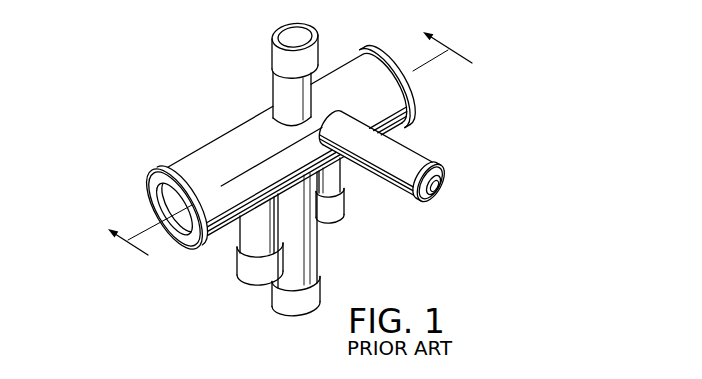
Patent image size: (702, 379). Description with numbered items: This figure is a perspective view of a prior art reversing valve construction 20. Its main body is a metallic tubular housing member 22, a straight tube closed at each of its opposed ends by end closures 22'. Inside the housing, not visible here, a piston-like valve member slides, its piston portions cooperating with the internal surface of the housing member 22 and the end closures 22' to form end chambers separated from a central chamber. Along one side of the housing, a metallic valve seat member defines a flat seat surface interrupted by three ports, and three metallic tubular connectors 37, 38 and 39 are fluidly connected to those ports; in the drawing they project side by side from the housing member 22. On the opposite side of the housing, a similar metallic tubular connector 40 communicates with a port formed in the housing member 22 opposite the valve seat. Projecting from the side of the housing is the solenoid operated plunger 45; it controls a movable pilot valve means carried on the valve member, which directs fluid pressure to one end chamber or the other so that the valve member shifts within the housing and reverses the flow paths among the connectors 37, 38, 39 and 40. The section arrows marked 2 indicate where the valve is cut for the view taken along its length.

The reversing valve construction 20 is at (281, 168).
The tubular housing member 22 is at (261, 145).
The end closures 22' is at (271, 152).
The metallic tubular connector 40 is at (272, 87).
The metallic tubular connector 37 is at (236, 245).
The metallic tubular connector 38 is at (317, 250).
The metallic tubular connector 39 is at (343, 180).
The solenoid operated plunger 45 is at (443, 188).
The section line 2- 2 is at (290, 145).